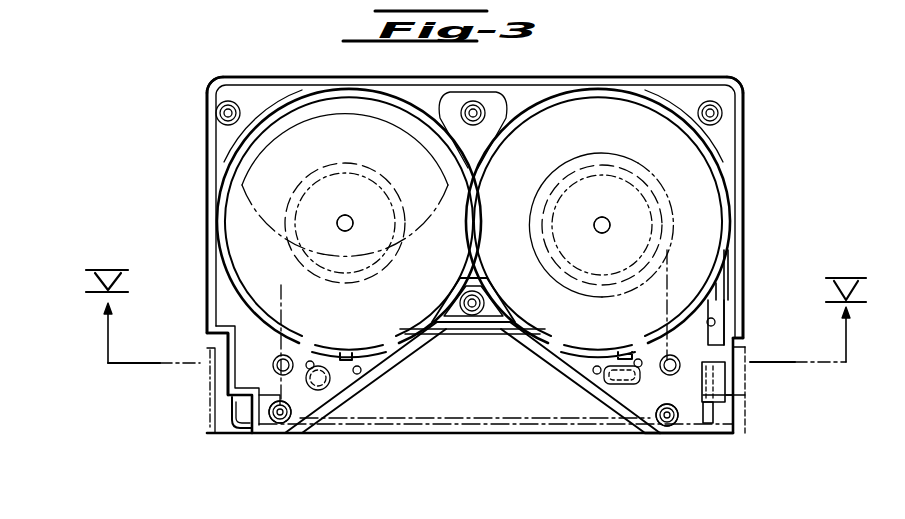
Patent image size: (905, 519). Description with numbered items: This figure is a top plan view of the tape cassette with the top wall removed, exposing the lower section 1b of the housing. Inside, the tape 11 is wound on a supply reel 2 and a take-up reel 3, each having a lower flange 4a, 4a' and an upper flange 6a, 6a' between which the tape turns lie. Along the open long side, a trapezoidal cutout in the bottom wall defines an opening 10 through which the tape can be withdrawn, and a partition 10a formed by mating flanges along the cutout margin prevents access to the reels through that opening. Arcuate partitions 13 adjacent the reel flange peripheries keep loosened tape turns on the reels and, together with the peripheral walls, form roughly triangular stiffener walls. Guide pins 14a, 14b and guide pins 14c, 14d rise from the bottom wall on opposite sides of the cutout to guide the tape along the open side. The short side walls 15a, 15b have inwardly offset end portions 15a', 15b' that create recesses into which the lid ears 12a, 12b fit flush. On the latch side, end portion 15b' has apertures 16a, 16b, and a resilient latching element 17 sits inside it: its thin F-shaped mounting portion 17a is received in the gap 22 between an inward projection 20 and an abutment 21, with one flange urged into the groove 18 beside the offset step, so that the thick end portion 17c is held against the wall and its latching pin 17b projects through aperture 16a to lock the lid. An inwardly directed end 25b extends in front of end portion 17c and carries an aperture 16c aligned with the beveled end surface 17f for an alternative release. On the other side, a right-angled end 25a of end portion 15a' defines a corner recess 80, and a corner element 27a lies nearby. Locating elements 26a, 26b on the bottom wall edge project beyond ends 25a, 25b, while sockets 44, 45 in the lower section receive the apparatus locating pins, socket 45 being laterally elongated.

The lower section 1b is at (208, 95).
The supply reel 2 is at (254, 189).
The take-up reel 3 is at (731, 165).
The lower flange 4a is at (243, 190).
The lower flange 4a' is at (722, 189).
The upper flange 6a is at (255, 216).
The upper flange 6a' is at (669, 215).
The opening 10 is at (466, 407).
The partition 10a is at (394, 340).
The tape 11 is at (360, 100).
The ear 12a is at (209, 360).
The ear 12b is at (677, 356).
The arcuate partitions 13 is at (528, 86).
The guide pin 14a is at (273, 365).
The guide pin 14b is at (300, 438).
The guide pin 14c is at (642, 400).
The guide pin 14d is at (661, 358).
The side wall 15a is at (185, 109).
The offset end portion 15a' is at (192, 317).
The side wall 15b is at (767, 93).
The offset end portion 15b' is at (809, 296).
The aperture 16a is at (748, 424).
The aperture 16b is at (748, 358).
The aperture 16c is at (726, 436).
The latching element 17 is at (662, 436).
The mounting portion 17a is at (738, 302).
The latching pin 17b is at (750, 398).
The thick end portion 17c is at (746, 446).
The beveled end surface 17f is at (750, 352).
The groove 18 is at (748, 335).
The inward projection 20 is at (724, 295).
The abutment 21 is at (708, 310).
The gap 22 is at (728, 280).
The right-angled end 25a is at (238, 434).
The inwardly directed end 25b is at (706, 436).
The locating element 26a is at (268, 438).
The locating element 26b is at (641, 434).
The front wall corner 27a is at (206, 431).
The socket 44 is at (385, 385).
The socket 45 is at (602, 378).
The recess 80 is at (229, 407).